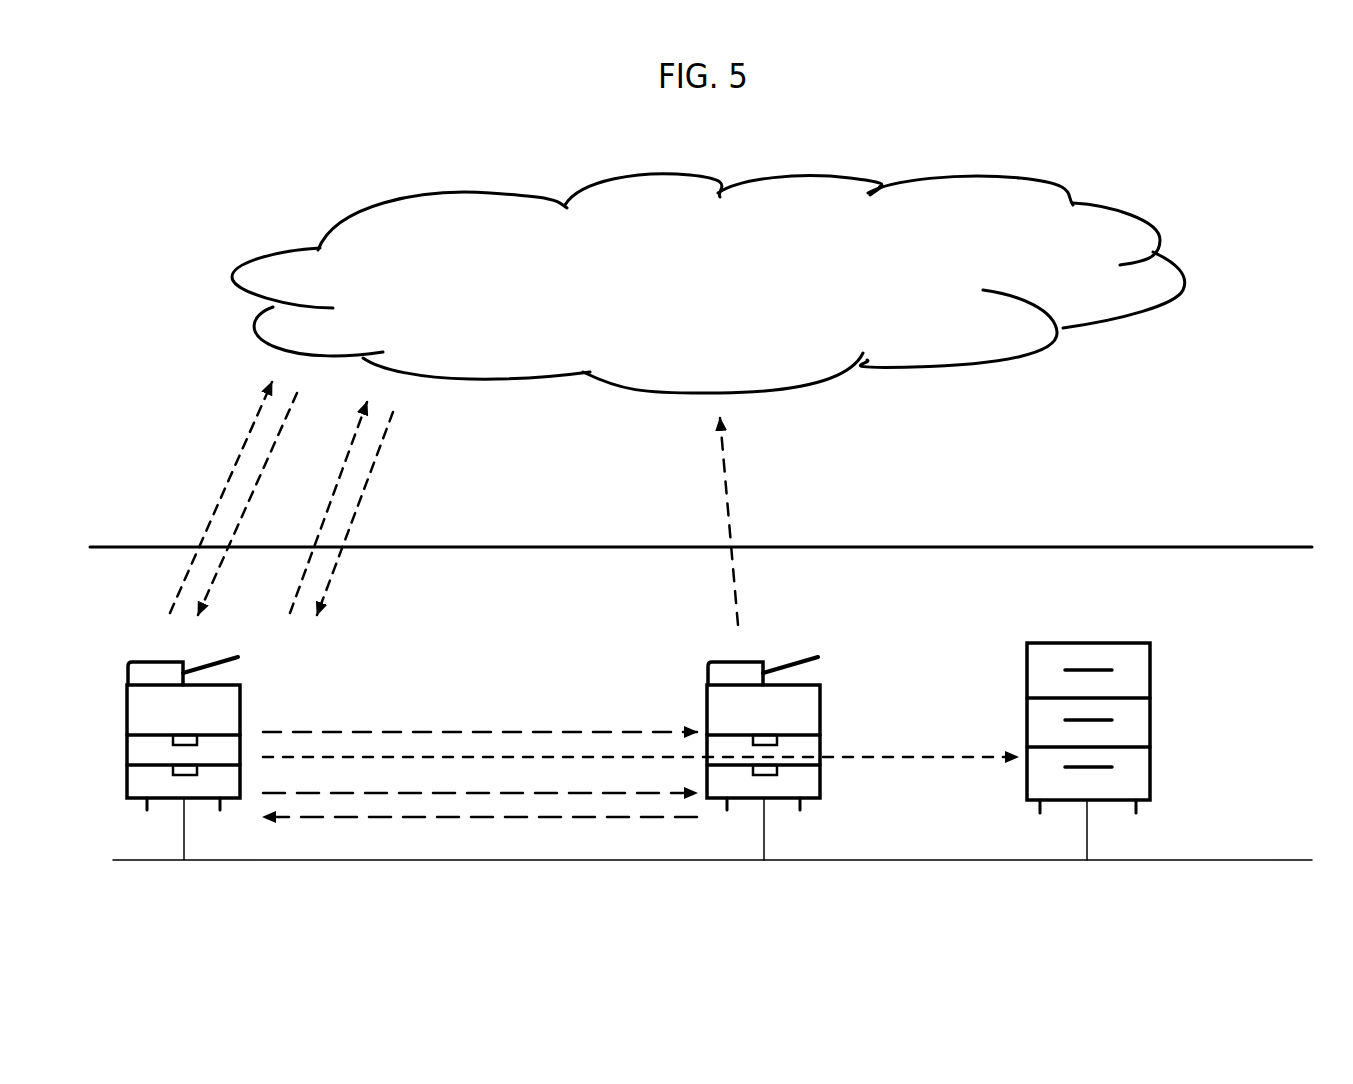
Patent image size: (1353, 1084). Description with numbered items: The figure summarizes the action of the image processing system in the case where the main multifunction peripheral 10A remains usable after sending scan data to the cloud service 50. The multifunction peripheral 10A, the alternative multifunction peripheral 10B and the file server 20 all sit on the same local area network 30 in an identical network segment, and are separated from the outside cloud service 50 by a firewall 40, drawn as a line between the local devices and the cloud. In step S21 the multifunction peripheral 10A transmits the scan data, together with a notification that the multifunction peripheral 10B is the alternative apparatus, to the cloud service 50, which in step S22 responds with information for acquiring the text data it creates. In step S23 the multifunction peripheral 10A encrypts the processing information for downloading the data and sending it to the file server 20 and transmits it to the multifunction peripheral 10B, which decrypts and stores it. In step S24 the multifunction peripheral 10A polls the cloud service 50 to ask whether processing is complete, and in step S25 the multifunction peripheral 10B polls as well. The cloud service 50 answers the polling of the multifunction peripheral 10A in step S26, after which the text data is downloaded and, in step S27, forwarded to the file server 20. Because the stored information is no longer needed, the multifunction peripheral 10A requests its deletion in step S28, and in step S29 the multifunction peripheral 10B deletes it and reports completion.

The multifunction peripheral 10A is at (242, 705).
The multifunction peripheral 10B is at (825, 715).
The file server 20 is at (1152, 708).
The local area network 30 is at (505, 860).
The firewall 40 is at (605, 547).
The cloud service 50 is at (678, 178).
The step S21 is at (233, 467).
The step S22 is at (243, 510).
The step S23 is at (470, 730).
The step S24 is at (347, 467).
The step S25 is at (727, 487).
The step S26 is at (353, 513).
The step S27 is at (565, 753).
The step S28 is at (347, 797).
The step S29 is at (405, 820).